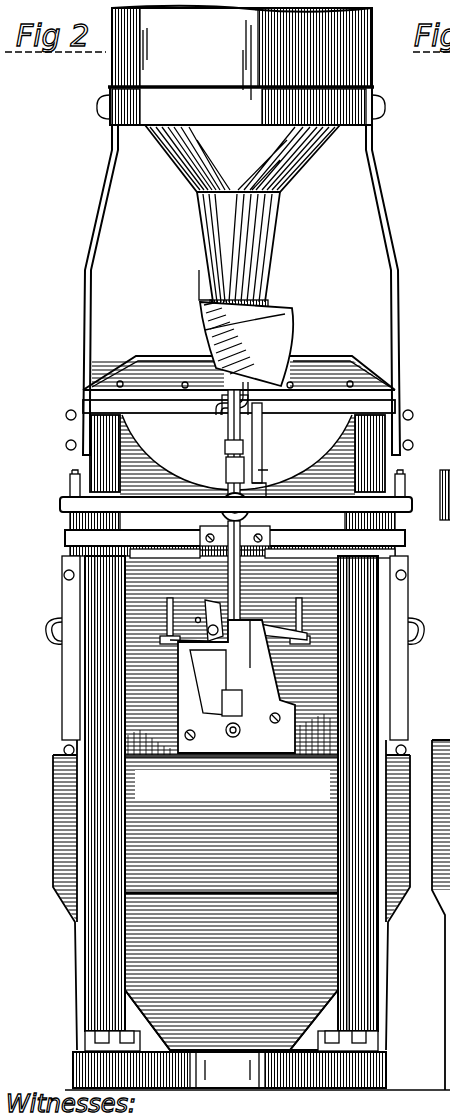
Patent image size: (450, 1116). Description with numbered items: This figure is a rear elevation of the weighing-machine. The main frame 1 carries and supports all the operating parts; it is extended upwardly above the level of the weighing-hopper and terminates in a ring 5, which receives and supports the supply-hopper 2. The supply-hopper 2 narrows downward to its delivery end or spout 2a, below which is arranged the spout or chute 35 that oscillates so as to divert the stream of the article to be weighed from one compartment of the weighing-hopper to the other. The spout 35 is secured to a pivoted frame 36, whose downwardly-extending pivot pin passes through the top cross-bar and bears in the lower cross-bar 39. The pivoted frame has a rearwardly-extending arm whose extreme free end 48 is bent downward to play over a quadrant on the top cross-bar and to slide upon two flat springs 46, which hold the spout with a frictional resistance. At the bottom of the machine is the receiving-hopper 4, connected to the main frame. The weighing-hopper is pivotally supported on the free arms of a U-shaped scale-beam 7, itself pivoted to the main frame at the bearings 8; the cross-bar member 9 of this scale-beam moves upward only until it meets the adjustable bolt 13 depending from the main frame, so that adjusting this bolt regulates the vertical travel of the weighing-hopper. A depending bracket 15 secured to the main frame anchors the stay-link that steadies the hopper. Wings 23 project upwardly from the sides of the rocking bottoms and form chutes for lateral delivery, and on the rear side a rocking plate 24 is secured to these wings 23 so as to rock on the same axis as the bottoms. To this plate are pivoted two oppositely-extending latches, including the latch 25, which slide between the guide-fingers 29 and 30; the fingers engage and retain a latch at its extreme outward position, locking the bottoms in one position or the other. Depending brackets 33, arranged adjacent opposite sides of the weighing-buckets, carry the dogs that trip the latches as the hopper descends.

The main frame 1 is at (346, 793).
The supply-hopper 2 is at (242, 53).
The spout of the supply-hopper 2a is at (270, 238).
The receiving-hopper 4 is at (231, 1020).
The ring 5 is at (241, 106).
The scale-beam 7 is at (405, 525).
The bearings 8 is at (442, 490).
The cross-bar member 9 is at (312, 500).
The adjustable bolt 13 is at (228, 444).
The depending bracket 15 is at (240, 595).
The wings 23 is at (184, 733).
The rocking plate 24 is at (285, 688).
The latch 25 is at (212, 624).
The guide-finger 29 is at (176, 612).
The guide-finger 30 is at (306, 620).
The depending brackets 33 is at (425, 607).
The spout or chute 35 is at (246, 344).
The pivoted frame 36 is at (270, 435).
The lower cross-bar 39 is at (330, 556).
The flat springs 46 is at (272, 395).
The bent end of arm 48 is at (207, 387).